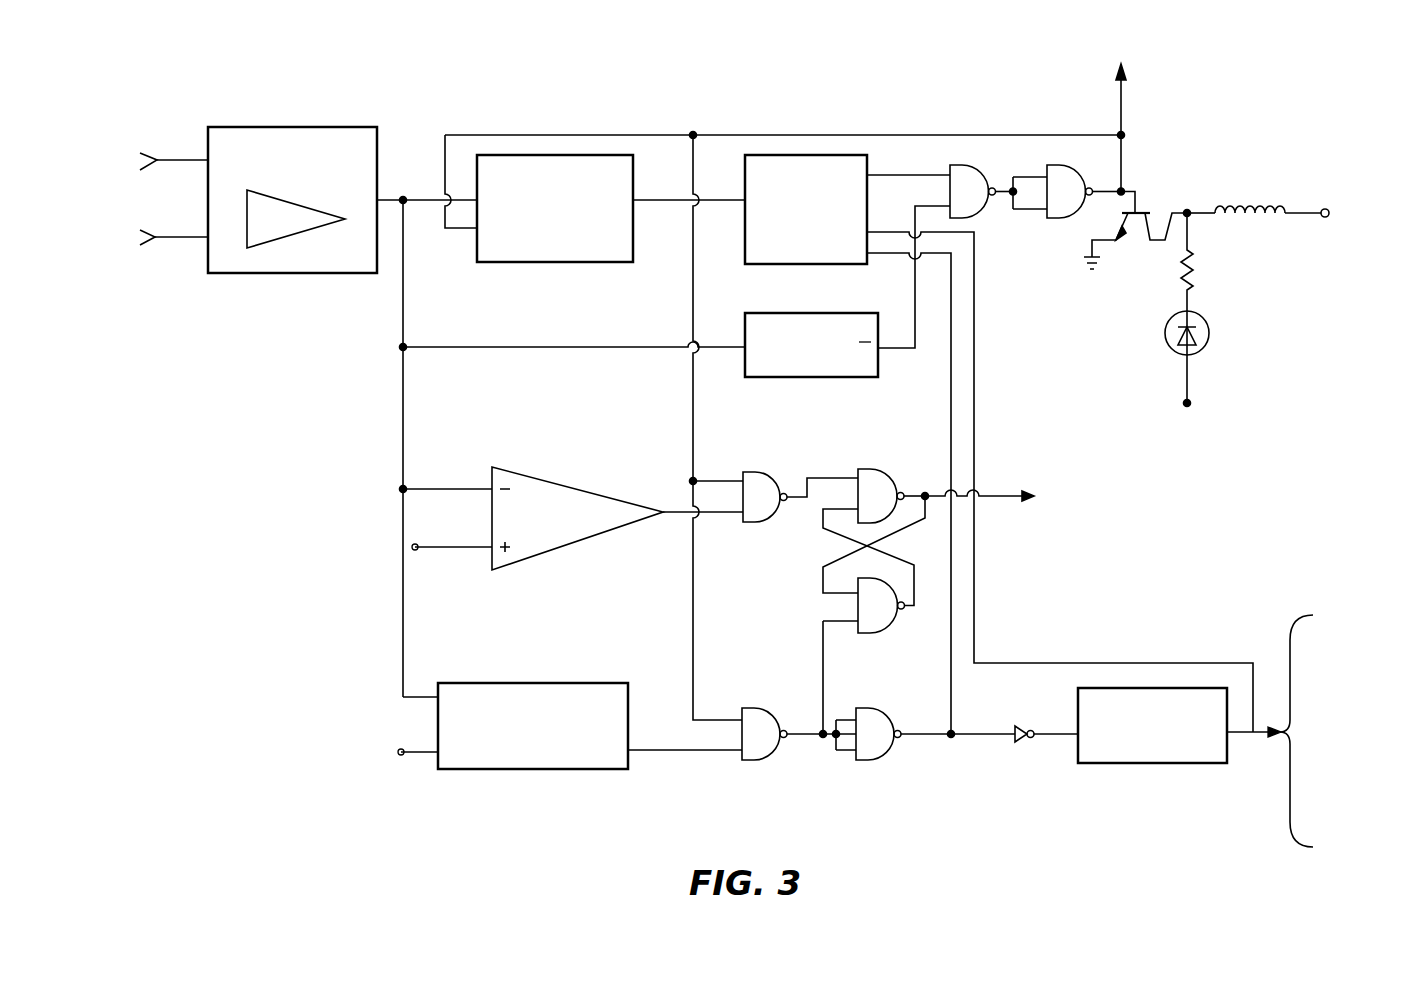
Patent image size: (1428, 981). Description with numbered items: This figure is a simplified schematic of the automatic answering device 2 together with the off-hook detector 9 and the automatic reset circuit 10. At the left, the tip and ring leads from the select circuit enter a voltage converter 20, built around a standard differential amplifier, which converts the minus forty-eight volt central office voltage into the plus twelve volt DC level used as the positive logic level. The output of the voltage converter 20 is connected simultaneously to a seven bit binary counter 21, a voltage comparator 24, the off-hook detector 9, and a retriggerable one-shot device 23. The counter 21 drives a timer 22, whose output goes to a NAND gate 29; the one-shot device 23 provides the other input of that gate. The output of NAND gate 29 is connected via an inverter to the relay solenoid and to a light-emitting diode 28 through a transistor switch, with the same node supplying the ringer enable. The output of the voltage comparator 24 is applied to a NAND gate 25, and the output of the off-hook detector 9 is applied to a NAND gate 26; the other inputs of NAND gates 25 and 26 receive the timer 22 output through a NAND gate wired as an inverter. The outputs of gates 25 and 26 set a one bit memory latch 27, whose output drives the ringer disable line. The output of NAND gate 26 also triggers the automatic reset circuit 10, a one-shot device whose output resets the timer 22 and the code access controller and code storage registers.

The automatic answering device 2 is at (219, 96).
The off-hook detector 9 is at (548, 683).
The automatic reset circuit 10 is at (1078, 700).
The voltage converter 20 is at (237, 273).
The 7 bit binary counter 21 is at (553, 262).
The 555 timer 22 is at (746, 264).
The retriggerable one-shot device 23 is at (749, 380).
The voltage comparator 24 is at (490, 571).
The NAND gate 25 is at (752, 523).
The NAND gate 26 is at (746, 760).
The one bit memory latch 27 is at (895, 464).
The LED 28 is at (1158, 347).
The NAND gate 29 is at (990, 176).